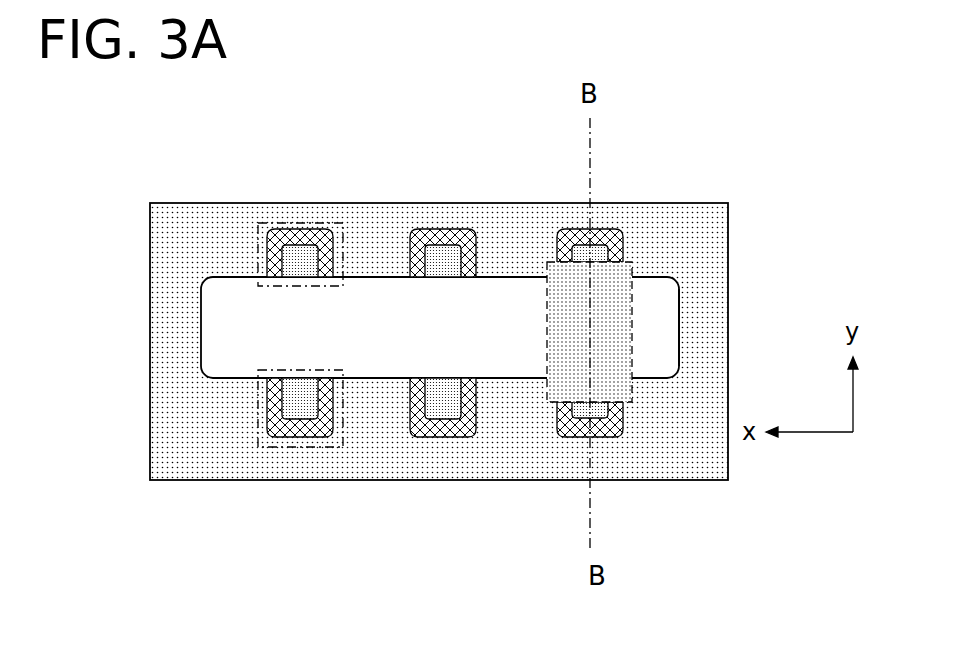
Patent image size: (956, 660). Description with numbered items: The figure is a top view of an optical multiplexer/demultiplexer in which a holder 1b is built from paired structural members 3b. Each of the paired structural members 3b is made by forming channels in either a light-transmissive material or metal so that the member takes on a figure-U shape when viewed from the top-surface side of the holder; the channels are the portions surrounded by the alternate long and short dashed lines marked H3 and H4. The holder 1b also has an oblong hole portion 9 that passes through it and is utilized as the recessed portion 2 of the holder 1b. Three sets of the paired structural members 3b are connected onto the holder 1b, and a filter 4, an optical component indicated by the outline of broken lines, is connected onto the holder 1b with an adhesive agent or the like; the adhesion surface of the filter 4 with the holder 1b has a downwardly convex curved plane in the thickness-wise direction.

The holder 1b is at (439, 299).
The oblong hole portion 9 is at (370, 327).
The recessed portion 2 is at (755, 303).
The paired structural members 3b is at (447, 180).
The filter 4 is at (636, 450).
The channel H3 is at (305, 187).
The channel H4 is at (319, 479).